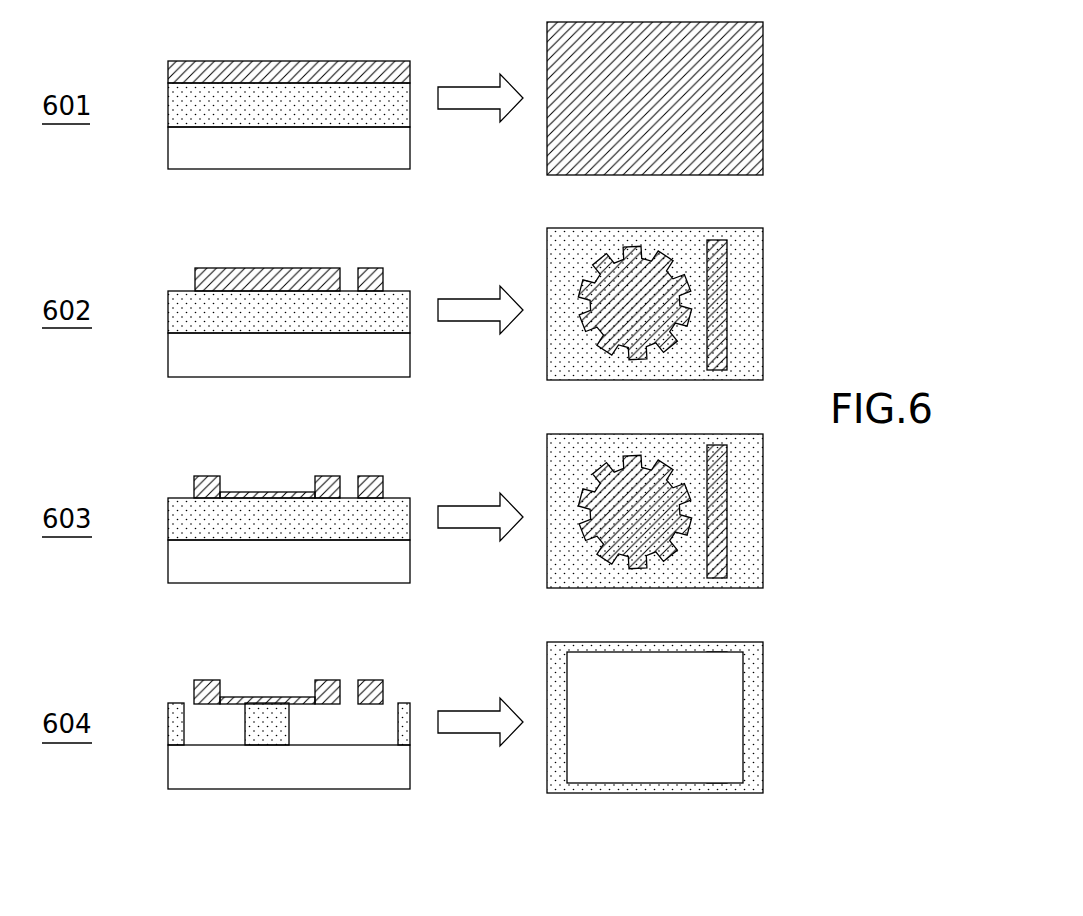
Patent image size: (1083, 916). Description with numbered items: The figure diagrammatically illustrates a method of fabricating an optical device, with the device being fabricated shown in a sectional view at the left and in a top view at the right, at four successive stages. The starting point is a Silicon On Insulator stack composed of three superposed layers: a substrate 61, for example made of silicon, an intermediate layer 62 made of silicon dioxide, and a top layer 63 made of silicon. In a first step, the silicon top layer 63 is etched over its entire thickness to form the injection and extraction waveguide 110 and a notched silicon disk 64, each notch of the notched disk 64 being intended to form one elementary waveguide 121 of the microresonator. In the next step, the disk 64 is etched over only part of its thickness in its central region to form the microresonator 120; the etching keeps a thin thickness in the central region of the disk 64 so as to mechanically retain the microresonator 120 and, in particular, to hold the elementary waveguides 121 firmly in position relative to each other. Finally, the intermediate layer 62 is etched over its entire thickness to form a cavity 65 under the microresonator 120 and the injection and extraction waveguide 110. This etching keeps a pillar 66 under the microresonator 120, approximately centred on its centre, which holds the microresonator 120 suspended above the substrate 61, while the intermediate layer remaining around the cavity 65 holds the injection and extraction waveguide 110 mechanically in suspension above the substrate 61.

The substrate 61 is at (402, 153).
The intermediate layer 62 is at (402, 112).
The top layer 63 is at (403, 73).
The notched silicon disk 64 is at (275, 282).
The cavity 65 is at (683, 764).
The pillar 66 is at (270, 718).
The injection and extraction waveguide 110 is at (370, 282).
The microresonator 120 is at (183, 480).
The elementary waveguide 121 is at (677, 267).